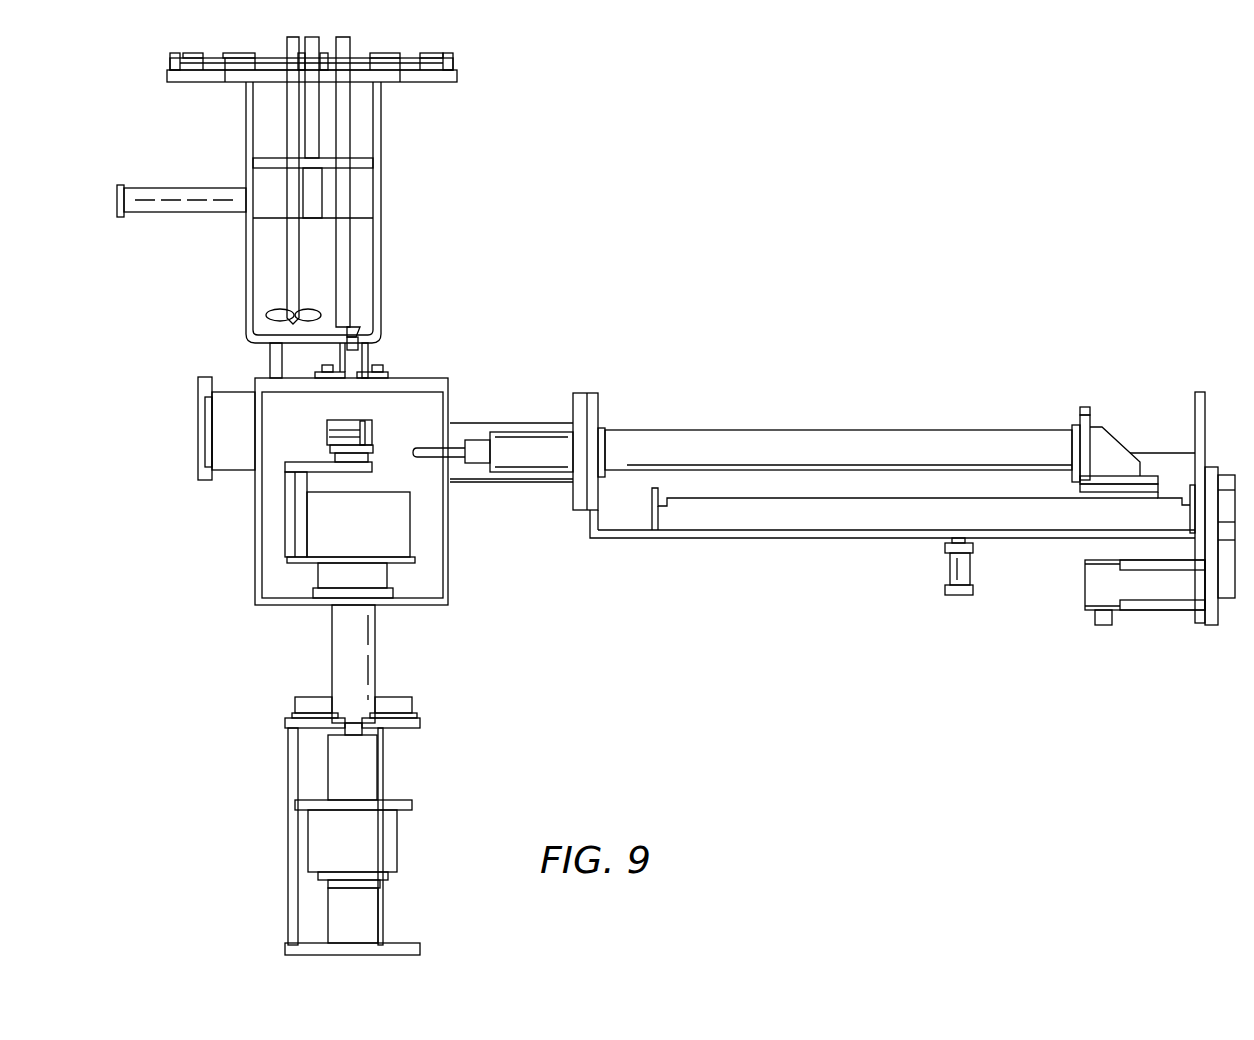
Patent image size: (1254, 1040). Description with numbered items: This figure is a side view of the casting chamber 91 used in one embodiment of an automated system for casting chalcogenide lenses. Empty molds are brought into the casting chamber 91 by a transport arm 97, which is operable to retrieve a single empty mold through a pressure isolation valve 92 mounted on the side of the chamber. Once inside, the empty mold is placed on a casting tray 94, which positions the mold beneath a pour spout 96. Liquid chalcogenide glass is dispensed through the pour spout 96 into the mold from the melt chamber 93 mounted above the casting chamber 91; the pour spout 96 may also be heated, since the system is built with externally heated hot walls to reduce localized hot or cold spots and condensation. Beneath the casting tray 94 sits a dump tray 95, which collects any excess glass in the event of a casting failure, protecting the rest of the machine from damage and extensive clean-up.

The casting chamber 91 is at (456, 520).
The pressure isolation valve 92 is at (204, 484).
The melt chamber 93 is at (386, 246).
The casting tray 94 is at (353, 478).
The dump tray 95 is at (424, 558).
The pour spout 96 is at (376, 357).
The transport arm 97 is at (428, 444).